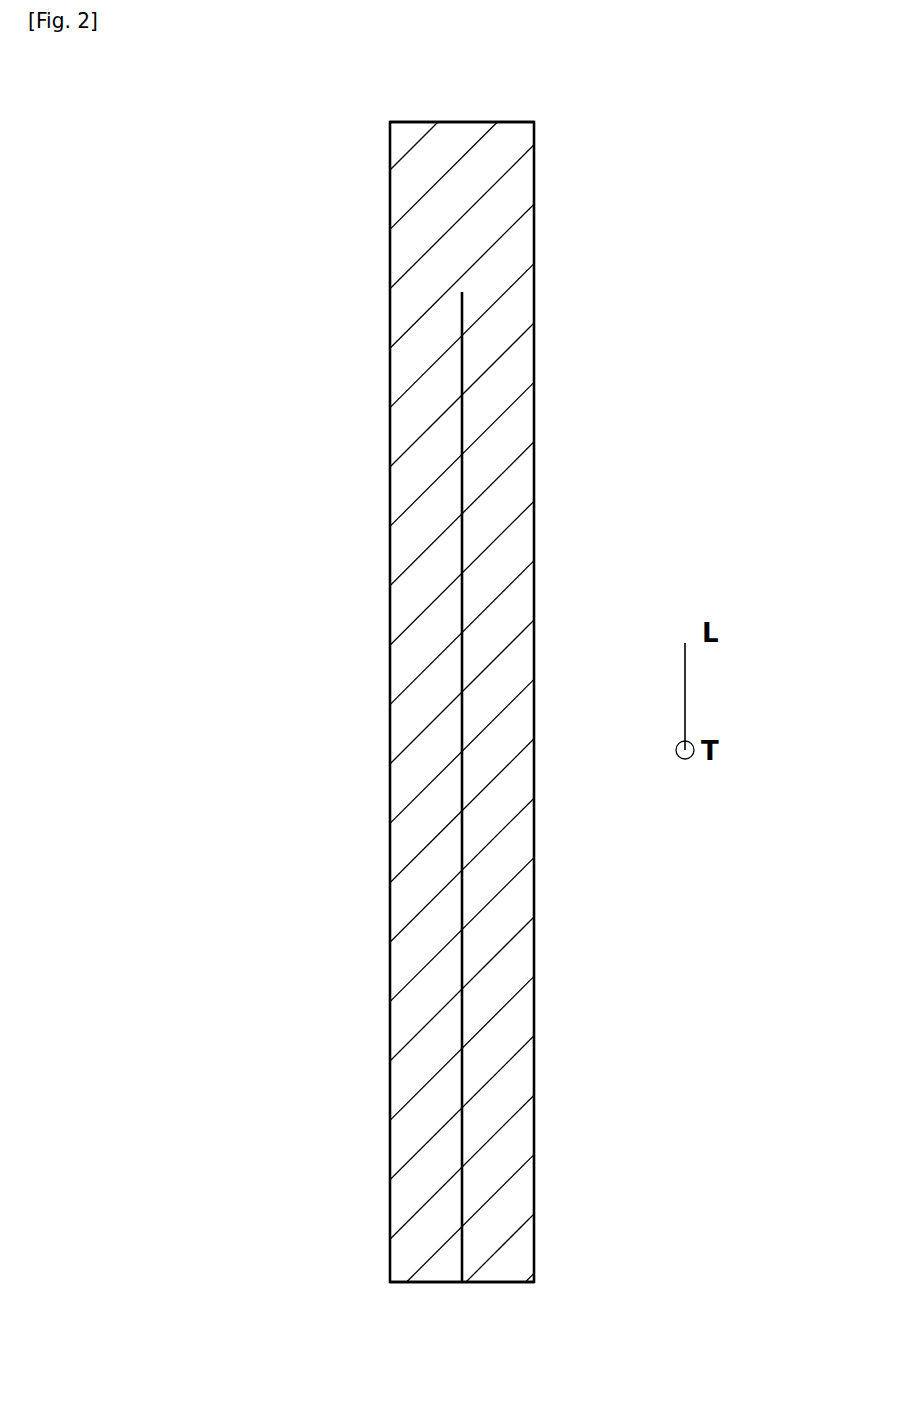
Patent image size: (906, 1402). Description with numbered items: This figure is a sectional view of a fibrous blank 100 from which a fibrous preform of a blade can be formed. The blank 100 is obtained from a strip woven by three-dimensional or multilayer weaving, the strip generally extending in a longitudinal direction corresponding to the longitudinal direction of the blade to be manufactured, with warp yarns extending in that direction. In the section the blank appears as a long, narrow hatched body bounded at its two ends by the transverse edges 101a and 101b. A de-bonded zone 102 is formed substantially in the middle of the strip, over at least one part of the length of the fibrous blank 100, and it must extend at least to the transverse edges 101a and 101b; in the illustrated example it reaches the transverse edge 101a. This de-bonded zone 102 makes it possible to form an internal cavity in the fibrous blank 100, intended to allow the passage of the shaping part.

The fibrous blank 100 is at (570, 1051).
The transverse edge 101a is at (501, 1282).
The transverse edge 101b is at (462, 122).
The de-bonded zone 102 is at (462, 785).